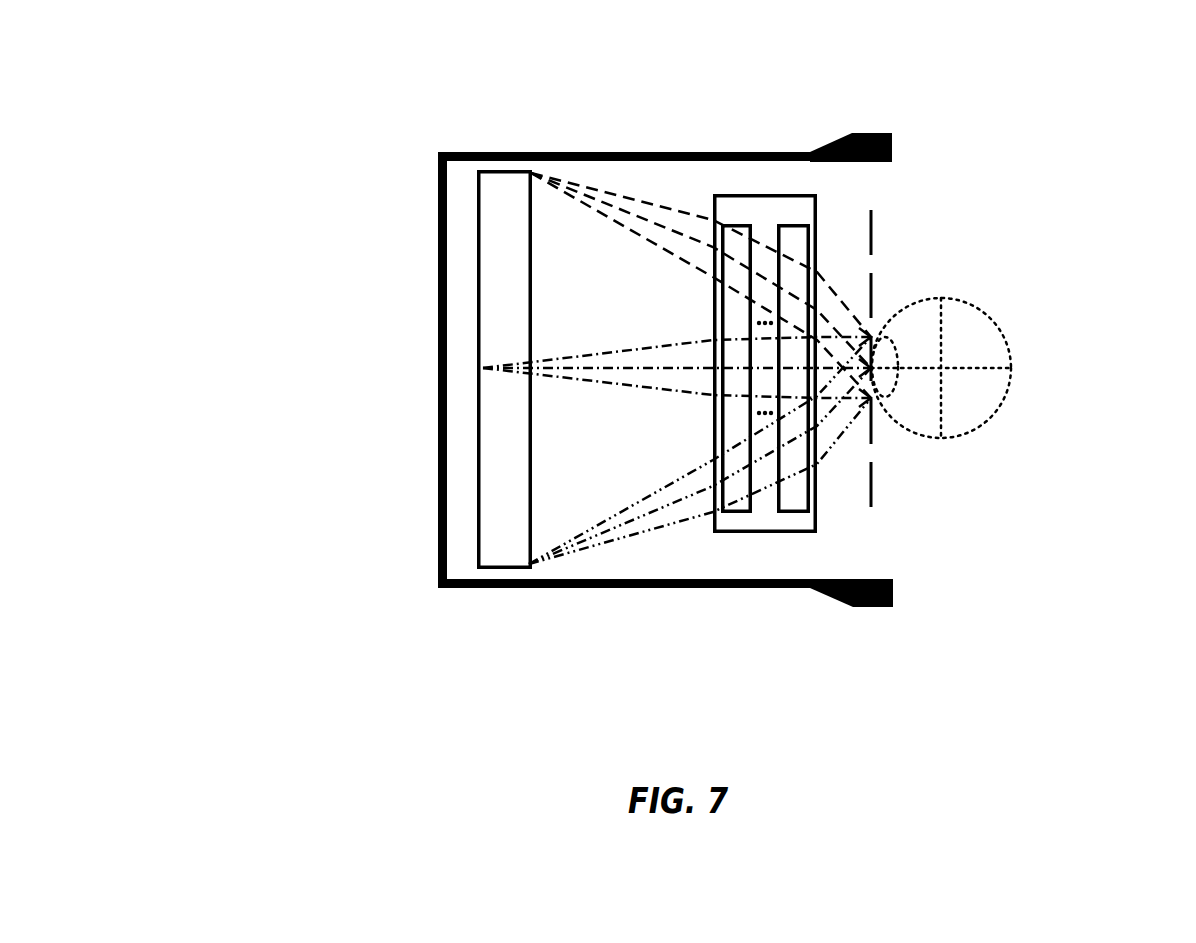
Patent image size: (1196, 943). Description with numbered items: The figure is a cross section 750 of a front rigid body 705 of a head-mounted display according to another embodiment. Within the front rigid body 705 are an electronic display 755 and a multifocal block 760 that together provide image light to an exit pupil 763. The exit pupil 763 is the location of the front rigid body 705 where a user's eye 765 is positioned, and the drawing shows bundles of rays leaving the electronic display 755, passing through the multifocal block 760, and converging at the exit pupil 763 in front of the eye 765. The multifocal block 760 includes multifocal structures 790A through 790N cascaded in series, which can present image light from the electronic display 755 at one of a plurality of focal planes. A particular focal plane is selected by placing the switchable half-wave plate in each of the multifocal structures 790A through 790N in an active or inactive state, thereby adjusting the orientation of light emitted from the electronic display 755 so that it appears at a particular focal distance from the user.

The cross section 750 is at (700, 385).
The front rigid body 705 is at (557, 122).
The electronic display 755 is at (483, 203).
The multifocal block 760 is at (849, 398).
The exit pupil 763 is at (872, 503).
The eye 765 is at (978, 308).
The multifocal structure 790A is at (736, 492).
The multifocal structure 790N is at (793, 492).